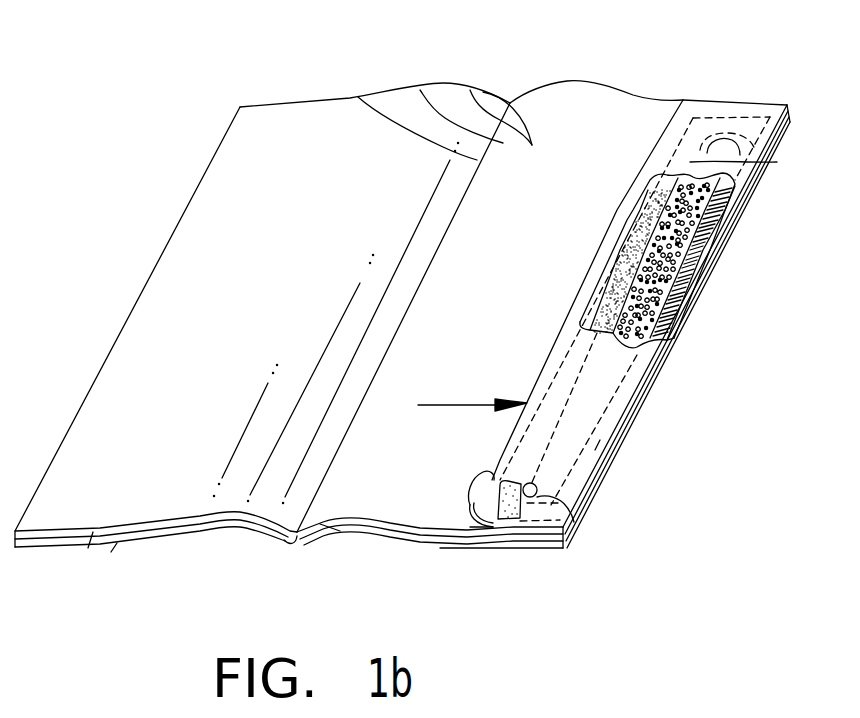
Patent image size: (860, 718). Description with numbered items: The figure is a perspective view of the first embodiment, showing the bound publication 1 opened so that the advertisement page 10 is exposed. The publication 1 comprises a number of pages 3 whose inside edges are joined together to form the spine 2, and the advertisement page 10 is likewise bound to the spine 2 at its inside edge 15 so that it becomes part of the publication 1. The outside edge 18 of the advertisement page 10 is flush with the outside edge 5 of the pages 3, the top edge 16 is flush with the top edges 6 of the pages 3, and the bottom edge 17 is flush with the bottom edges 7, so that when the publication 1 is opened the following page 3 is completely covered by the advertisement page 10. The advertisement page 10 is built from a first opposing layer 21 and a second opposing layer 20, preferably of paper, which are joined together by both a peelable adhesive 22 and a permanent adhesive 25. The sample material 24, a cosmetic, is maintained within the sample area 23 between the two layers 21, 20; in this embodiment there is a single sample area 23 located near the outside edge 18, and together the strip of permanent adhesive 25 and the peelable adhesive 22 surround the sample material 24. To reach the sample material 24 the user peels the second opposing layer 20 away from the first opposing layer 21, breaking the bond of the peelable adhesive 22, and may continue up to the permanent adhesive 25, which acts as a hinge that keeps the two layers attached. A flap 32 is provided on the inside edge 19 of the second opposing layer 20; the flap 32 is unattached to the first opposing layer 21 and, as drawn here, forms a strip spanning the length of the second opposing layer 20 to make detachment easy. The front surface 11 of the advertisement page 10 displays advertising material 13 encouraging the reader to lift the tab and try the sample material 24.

The bound publication 1 is at (185, 131).
The spine 2 is at (296, 538).
The pages 3 is at (117, 544).
The outside edge of the pages 5 is at (640, 402).
The top edges of the pages 6 is at (262, 104).
The bottom edges of the pages 7 is at (335, 531).
The advertisement page 10 is at (577, 68).
The front surface 11 is at (420, 90).
The advertising material 13 is at (470, 90).
The inside edge of the advertisement page 15 is at (358, 97).
The top edge of the advertisement page 16 is at (510, 102).
The bottom edge of the advertisement page 17 is at (387, 528).
The outside edge of the advertisement page 18 is at (613, 450).
The inside edge of the second opposing layer 19 is at (483, 472).
The second opposing layer 20 is at (690, 116).
The first opposing layer 21 is at (625, 110).
The peelable adhesive 22 is at (777, 162).
The sample area 23 is at (693, 239).
The sample material 24 is at (660, 283).
The permanent adhesive 25 is at (660, 322).
The flap 32 is at (470, 527).